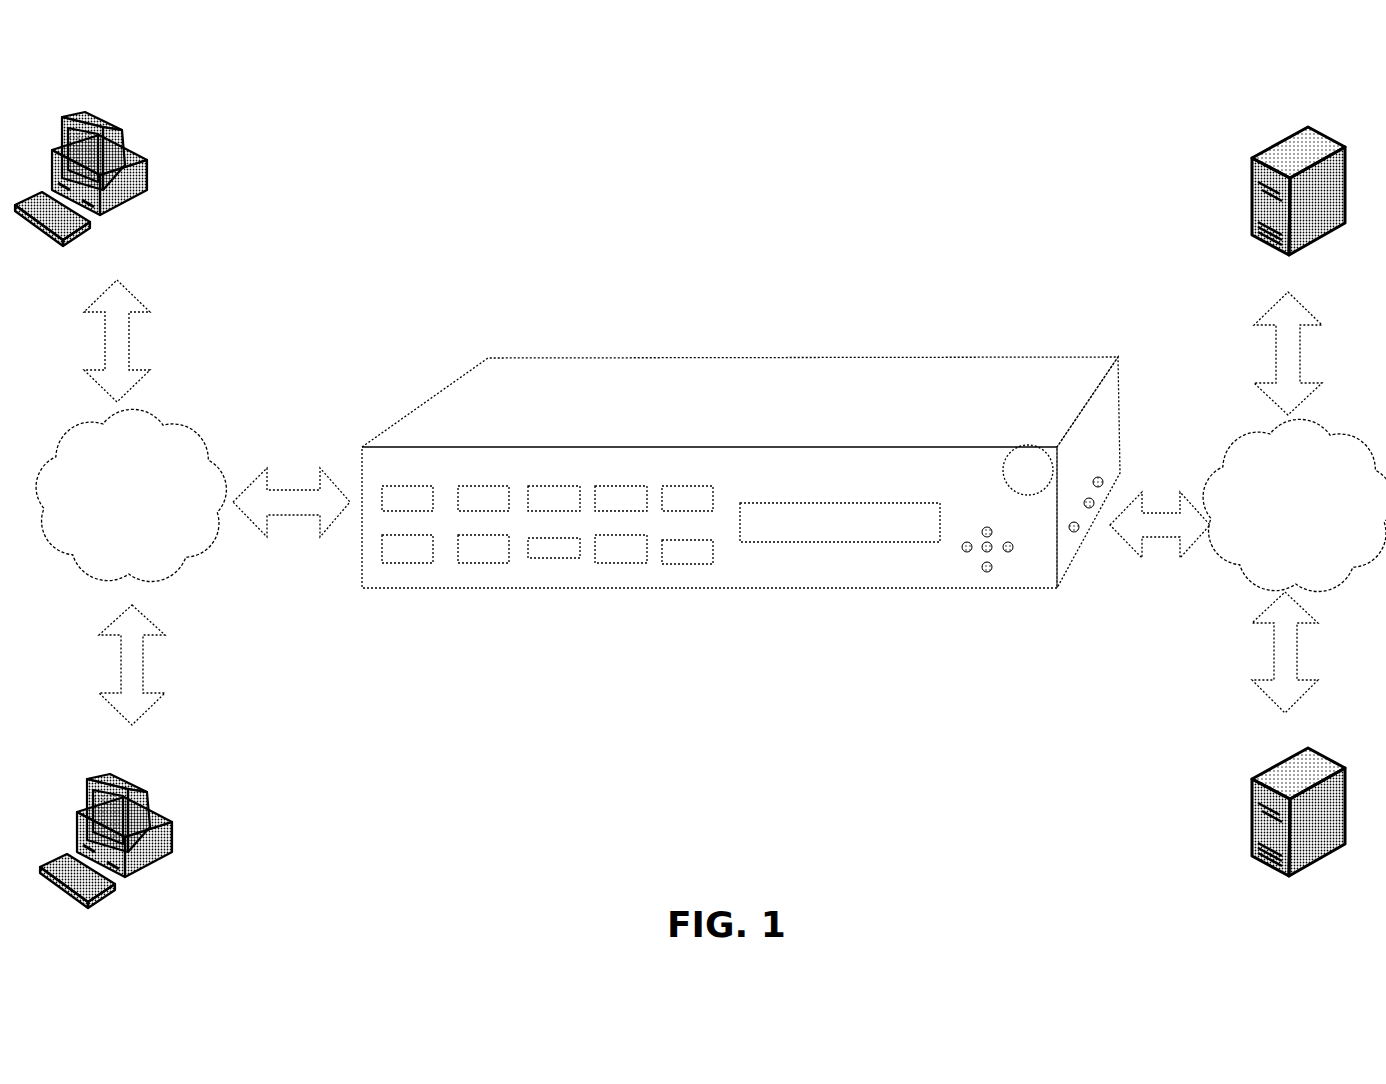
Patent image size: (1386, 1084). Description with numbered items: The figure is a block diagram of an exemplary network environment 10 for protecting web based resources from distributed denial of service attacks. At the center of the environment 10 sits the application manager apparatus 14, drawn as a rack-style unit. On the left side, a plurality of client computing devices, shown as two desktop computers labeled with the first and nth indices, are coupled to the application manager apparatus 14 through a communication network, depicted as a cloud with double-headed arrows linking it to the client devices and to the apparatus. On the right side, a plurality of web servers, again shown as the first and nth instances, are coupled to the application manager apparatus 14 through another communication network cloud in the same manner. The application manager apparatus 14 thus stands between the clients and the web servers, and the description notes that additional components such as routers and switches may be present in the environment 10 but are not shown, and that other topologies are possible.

The network environment 10 is at (608, 210).
The application manager apparatus 14 is at (998, 357).